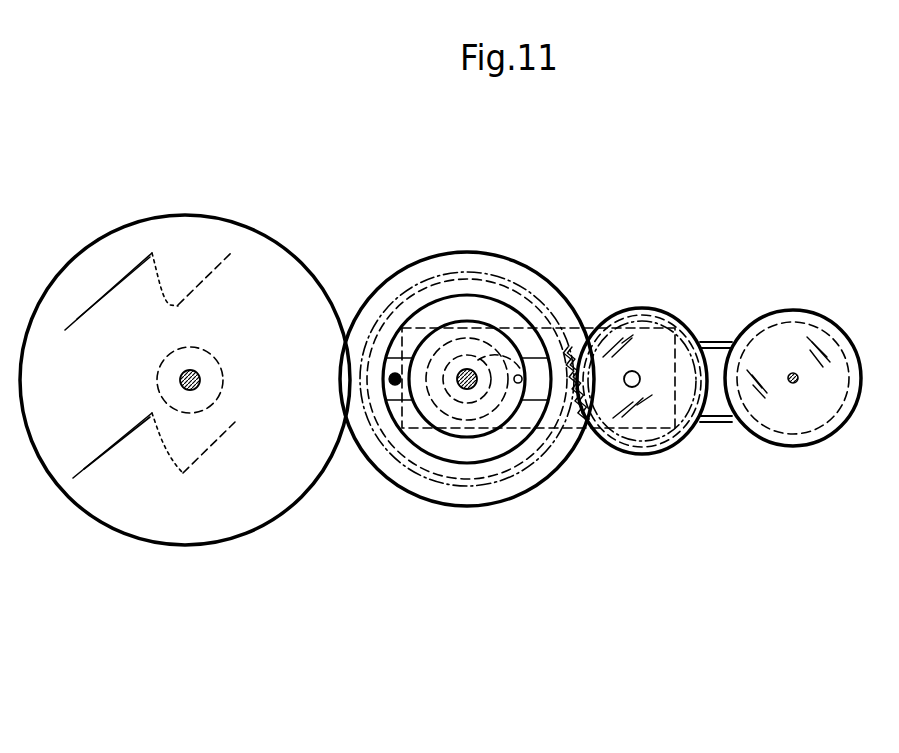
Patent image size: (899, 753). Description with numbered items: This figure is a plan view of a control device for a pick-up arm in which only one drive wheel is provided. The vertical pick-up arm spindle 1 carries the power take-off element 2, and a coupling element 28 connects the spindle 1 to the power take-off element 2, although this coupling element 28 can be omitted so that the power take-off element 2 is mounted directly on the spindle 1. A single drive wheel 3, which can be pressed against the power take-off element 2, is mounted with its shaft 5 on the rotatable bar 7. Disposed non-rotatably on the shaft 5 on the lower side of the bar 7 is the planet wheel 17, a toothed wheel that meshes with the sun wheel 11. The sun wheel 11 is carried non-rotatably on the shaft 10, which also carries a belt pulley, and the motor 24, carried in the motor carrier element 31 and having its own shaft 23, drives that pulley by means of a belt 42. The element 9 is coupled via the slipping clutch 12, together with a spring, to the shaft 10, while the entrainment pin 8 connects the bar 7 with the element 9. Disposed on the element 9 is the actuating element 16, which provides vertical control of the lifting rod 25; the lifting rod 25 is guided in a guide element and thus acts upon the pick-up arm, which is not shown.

The pick-up arm spindle 1 is at (200, 382).
The power take-off element 2 is at (275, 513).
The drive wheel 3 is at (642, 308).
The shaft 5 is at (640, 379).
The bar 7 is at (414, 422).
The entrainment pin 8 is at (518, 384).
The element 9 is at (472, 260).
The shaft 10 is at (468, 390).
The sun wheel 11 is at (542, 298).
The slipping clutch 12 is at (523, 378).
The actuating element 16 is at (498, 309).
The planet wheel 17 is at (679, 327).
The shaft of the motor 23 is at (792, 383).
The motor 24 is at (850, 424).
The lifting rod 25 is at (393, 378).
The coupling element 28 is at (158, 384).
The motor carrier element 31 is at (810, 443).
The belt 42 is at (727, 422).